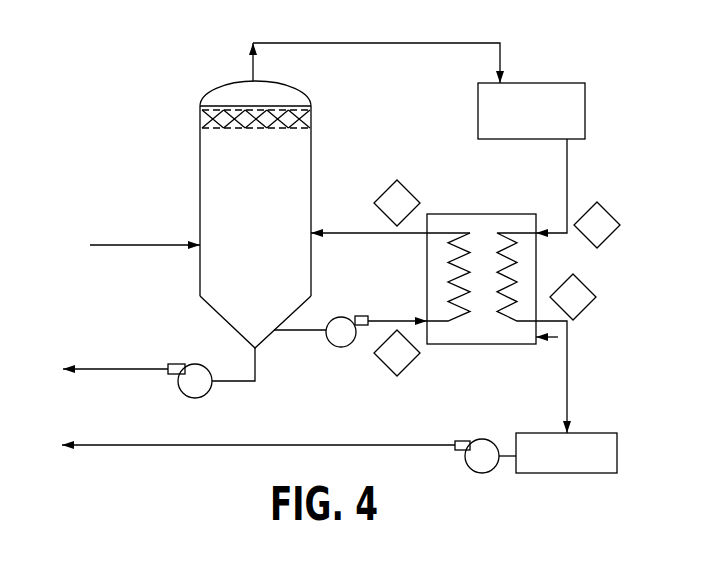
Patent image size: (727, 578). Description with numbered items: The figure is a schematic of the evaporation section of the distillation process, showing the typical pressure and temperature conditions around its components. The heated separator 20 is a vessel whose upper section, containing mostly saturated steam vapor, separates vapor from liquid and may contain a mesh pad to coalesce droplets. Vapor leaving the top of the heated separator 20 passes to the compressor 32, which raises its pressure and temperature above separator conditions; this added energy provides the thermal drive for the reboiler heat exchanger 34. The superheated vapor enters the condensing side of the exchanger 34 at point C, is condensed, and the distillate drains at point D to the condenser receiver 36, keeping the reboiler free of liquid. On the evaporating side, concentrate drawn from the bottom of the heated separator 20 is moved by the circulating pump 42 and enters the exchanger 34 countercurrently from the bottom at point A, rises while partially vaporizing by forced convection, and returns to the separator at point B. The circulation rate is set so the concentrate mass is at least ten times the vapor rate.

The heated separator 20 is at (217, 90).
The compressor 32 is at (538, 90).
The reboiler heat exchanger 34 is at (558, 338).
The condenser receiver 36 is at (577, 467).
The circulating pump 42 is at (340, 340).